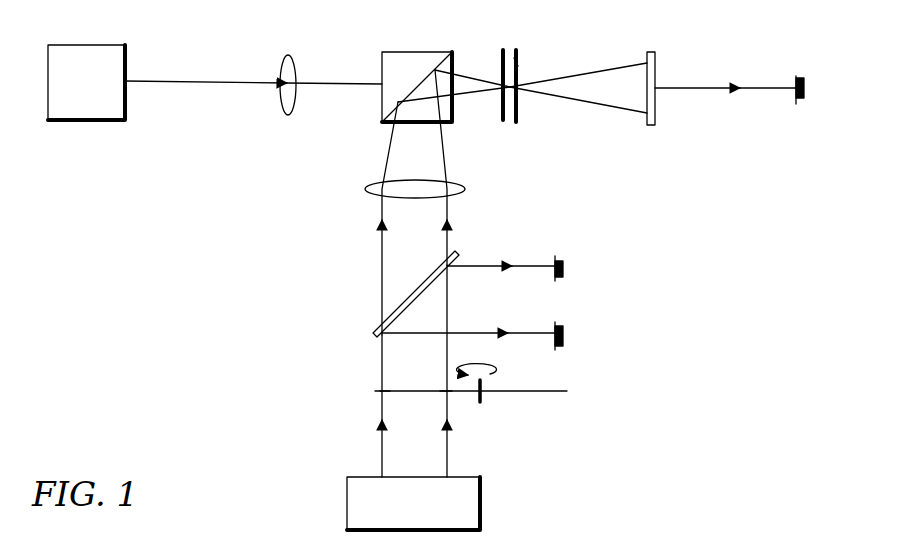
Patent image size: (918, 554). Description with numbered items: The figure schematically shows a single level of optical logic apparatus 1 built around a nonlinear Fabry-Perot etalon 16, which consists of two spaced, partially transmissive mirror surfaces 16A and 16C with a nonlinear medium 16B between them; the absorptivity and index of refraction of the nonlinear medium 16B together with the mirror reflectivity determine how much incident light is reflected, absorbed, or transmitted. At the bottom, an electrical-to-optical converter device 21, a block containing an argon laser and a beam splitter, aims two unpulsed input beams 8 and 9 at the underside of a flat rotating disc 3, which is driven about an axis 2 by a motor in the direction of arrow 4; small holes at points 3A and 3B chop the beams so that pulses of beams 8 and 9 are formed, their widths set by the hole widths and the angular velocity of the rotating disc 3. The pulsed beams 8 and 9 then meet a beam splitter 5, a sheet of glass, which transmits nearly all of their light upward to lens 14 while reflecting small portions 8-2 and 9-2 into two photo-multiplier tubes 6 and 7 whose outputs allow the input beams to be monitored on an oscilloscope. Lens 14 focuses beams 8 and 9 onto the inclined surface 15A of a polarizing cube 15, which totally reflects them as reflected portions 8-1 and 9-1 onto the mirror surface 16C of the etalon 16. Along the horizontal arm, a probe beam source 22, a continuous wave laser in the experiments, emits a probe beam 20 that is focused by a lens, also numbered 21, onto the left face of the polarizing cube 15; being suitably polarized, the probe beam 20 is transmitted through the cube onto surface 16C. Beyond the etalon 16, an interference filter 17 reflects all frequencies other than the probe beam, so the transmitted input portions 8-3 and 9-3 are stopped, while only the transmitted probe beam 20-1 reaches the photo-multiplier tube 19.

The optical logic apparatus 1 is at (282, 272).
The axis 2 is at (483, 399).
The rotating disc 3 is at (562, 391).
The hole 3A is at (386, 388).
The hole 3B is at (440, 388).
The arrow 4 is at (480, 364).
The beam splitter 5 is at (424, 282).
The photo-multiplier tube 6 is at (564, 266).
The photo-multiplier tube 7 is at (564, 335).
The input beam 8 is at (381, 240).
The reflected portion of beam 8 8-1 is at (471, 94).
The reflected portion of beam 8 8-2 is at (476, 332).
The transmitted portion of beam 8 8-3 is at (606, 68).
The input beam 9 is at (449, 231).
The reflected portion of beam 9 9-1 is at (467, 73).
The reflected portion of beam 9 9-2 is at (485, 265).
The transmitted portion of beam 9 9-3 is at (614, 106).
The lens 14 is at (462, 184).
The polarizing cube 15 is at (392, 51).
The inclined surface 15A is at (437, 62).
The nonlinear Fabry-Perot etalon 16 is at (528, 84).
The mirror surface 16A is at (519, 64).
The nonlinear medium 16B is at (516, 55).
The mirror surface 16C is at (503, 55).
The interference filter 17 is at (656, 58).
The photo-multiplier tube 19 is at (805, 80).
The probe beam 20 is at (190, 81).
The transmitted probe beam 20-1 is at (752, 87).
The electrical-to-optical converter device 21 is at (291, 56).
The probe beam source 22 is at (112, 46).